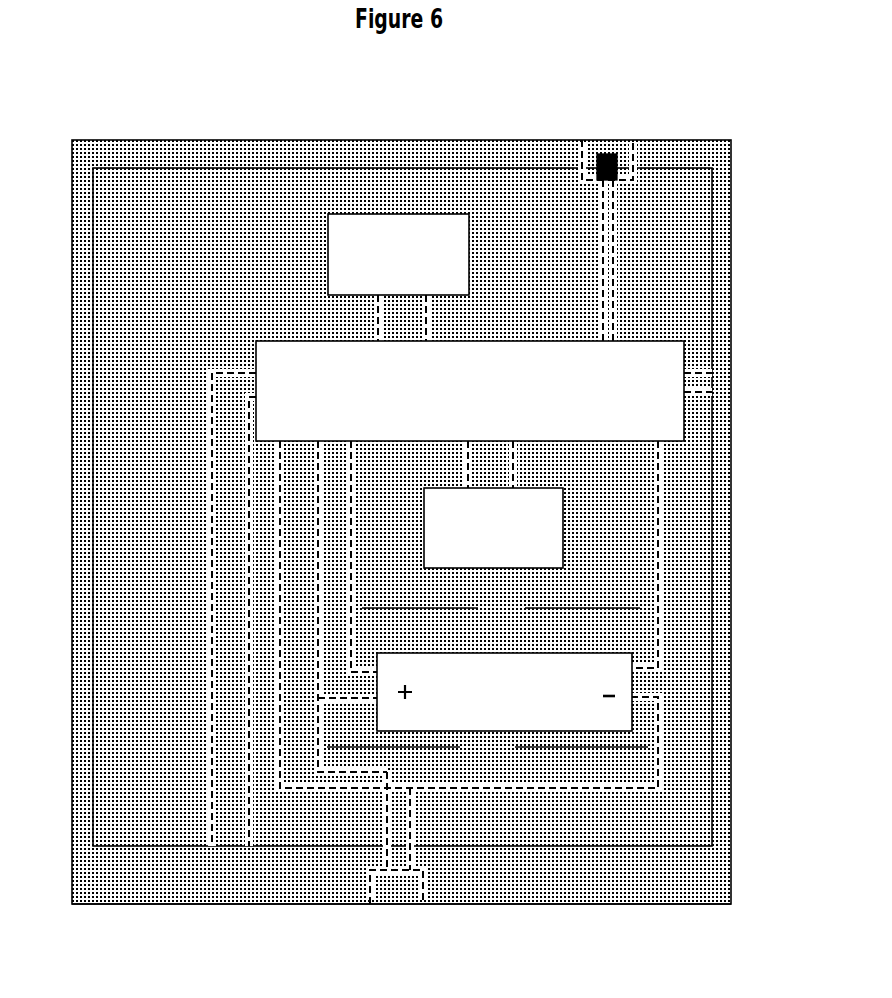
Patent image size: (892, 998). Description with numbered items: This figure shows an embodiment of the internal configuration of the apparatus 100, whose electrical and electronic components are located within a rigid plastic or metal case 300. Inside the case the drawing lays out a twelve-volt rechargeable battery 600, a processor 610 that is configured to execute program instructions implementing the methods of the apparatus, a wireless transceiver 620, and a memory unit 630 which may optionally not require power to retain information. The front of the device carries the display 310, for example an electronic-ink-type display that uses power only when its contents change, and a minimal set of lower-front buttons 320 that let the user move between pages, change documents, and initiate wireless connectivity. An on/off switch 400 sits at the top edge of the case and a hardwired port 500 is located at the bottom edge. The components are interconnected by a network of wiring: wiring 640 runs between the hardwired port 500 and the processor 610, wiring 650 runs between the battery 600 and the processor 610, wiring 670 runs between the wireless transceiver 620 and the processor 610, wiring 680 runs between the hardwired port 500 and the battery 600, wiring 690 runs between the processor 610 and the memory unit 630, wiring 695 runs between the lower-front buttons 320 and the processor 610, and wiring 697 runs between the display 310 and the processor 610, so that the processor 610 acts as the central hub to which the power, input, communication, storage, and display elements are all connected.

The apparatus 100 is at (414, 514).
The rigid case 300 is at (717, 152).
The display 310 is at (527, 168).
The lower-front buttons 320 is at (602, 880).
The on/off switch 400 is at (617, 152).
The hardwired port 500 is at (398, 895).
The rechargeable battery 600 is at (504, 692).
The processor 610 is at (470, 391).
The wireless transceiver 620 is at (398, 254).
The memory unit 630 is at (493, 528).
The wiring 640 is at (469, 614).
The wiring 650 is at (501, 608).
The wiring 670 is at (402, 318).
The wiring 680 is at (487, 747).
The wiring 690 is at (490, 464).
The wiring 695 is at (234, 609).
The wiring 697 is at (705, 383).